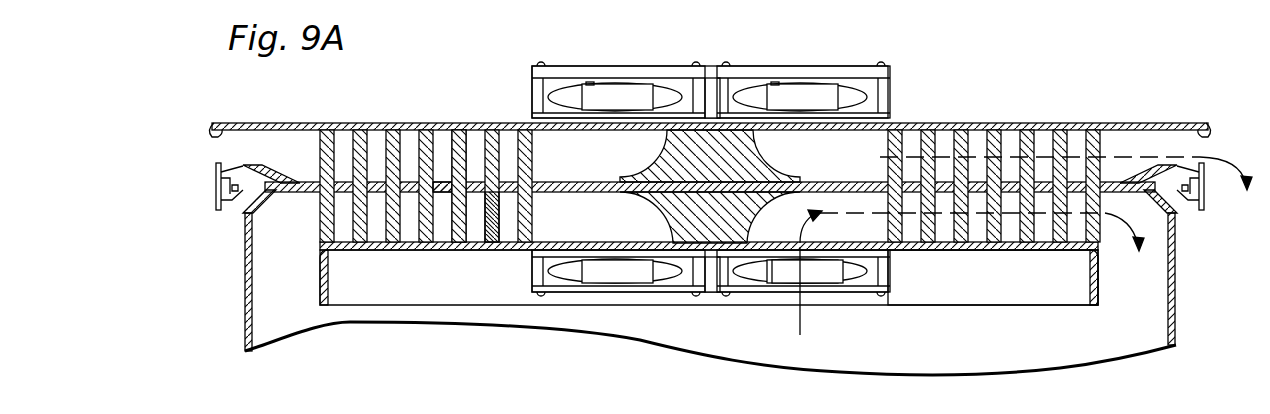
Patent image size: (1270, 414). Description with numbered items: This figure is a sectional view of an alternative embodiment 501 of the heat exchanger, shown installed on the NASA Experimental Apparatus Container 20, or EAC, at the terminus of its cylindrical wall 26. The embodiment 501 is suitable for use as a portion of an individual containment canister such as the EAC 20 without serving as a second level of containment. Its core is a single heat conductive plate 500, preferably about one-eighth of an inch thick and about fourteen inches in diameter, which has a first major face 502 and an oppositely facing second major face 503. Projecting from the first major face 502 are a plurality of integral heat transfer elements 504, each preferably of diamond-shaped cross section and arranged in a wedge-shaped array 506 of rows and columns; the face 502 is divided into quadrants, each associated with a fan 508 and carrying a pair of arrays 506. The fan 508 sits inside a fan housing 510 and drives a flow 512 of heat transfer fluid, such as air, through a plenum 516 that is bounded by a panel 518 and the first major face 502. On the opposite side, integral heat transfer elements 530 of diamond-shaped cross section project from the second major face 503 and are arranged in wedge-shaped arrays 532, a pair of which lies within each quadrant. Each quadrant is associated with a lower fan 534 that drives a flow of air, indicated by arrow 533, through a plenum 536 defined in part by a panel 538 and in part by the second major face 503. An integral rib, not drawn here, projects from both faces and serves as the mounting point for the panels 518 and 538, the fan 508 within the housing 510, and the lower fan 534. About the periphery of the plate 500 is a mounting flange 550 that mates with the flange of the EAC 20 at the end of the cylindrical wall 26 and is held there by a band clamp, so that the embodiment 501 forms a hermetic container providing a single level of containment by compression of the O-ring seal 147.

The Experimental Apparatus Container 20 is at (236, 310).
The cylindrical wall 26 is at (246, 276).
The O-ring seal 147 is at (1160, 198).
The heat conductive plate 500 is at (243, 212).
The alternative embodiment 501 is at (1118, 80).
The first major face 502 is at (292, 215).
The second major face 503 is at (271, 203).
The integral heat transfer elements 504 is at (362, 150).
The wedge-shaped array 506 is at (1100, 117).
The fan 508 is at (605, 93).
The fan housing 510 is at (645, 53).
The flow 512 is at (838, 147).
The plenum 516 is at (452, 128).
The panel 518 is at (444, 140).
The integral heat transfer elements 530 is at (370, 243).
The wedge-shaped array 532 is at (1077, 258).
The arrow 533 is at (797, 318).
The fan 534 is at (822, 277).
The plenum 536 is at (479, 243).
The panel 538 is at (441, 250).
The mounting flange 550 is at (280, 163).